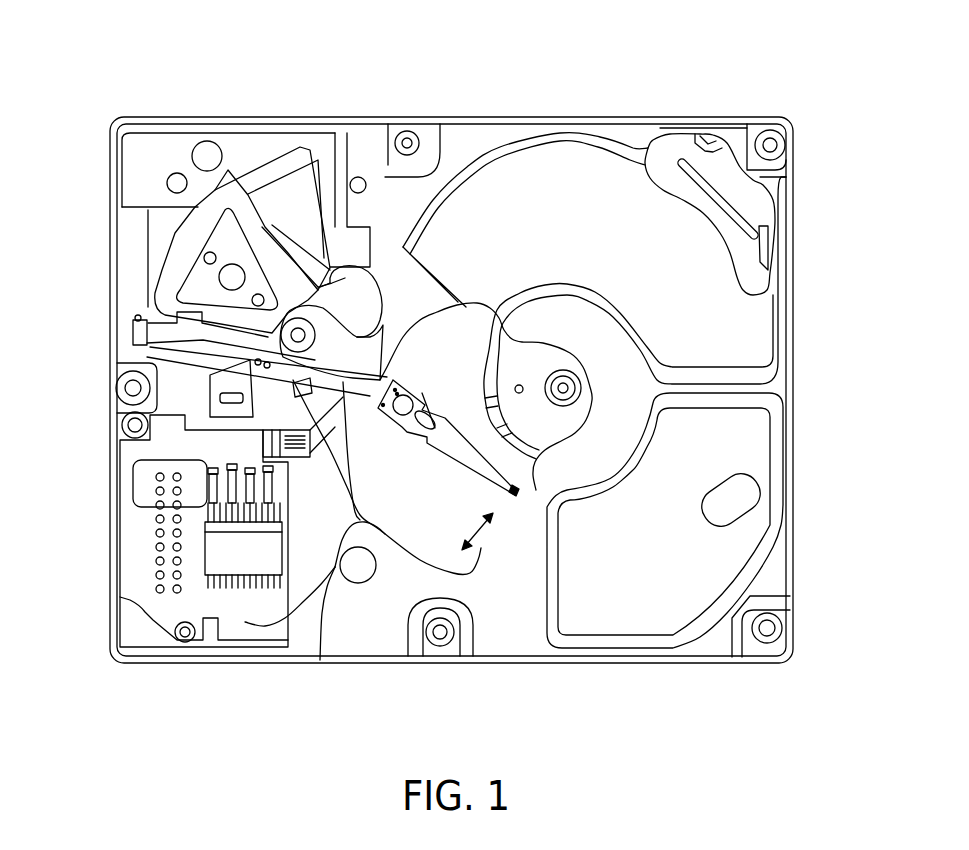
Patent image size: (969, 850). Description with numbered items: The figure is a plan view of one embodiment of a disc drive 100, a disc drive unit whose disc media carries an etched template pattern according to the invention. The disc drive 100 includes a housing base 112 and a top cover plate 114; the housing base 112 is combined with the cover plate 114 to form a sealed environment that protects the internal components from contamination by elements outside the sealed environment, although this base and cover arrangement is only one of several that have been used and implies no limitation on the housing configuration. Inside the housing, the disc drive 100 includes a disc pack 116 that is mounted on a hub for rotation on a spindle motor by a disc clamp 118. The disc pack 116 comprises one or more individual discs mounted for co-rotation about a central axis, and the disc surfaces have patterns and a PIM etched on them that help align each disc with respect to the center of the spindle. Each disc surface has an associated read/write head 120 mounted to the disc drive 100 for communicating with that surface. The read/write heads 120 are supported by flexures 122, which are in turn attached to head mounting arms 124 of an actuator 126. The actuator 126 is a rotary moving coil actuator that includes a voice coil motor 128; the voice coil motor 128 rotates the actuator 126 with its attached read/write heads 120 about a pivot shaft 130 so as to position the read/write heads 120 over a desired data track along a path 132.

The disc drive 100 is at (125, 47).
The housing base 112 is at (240, 660).
The top cover plate 114 is at (780, 385).
The disc pack 116 is at (420, 530).
The disc clamp 118 is at (577, 417).
The read/write head 120 is at (515, 495).
The flexure 122 is at (467, 457).
The head mounting arm 124 is at (135, 343).
The actuator 126 is at (347, 307).
The voice coil motor 128 is at (283, 168).
The pivot shaft 130 is at (287, 333).
The path 132 is at (480, 537).